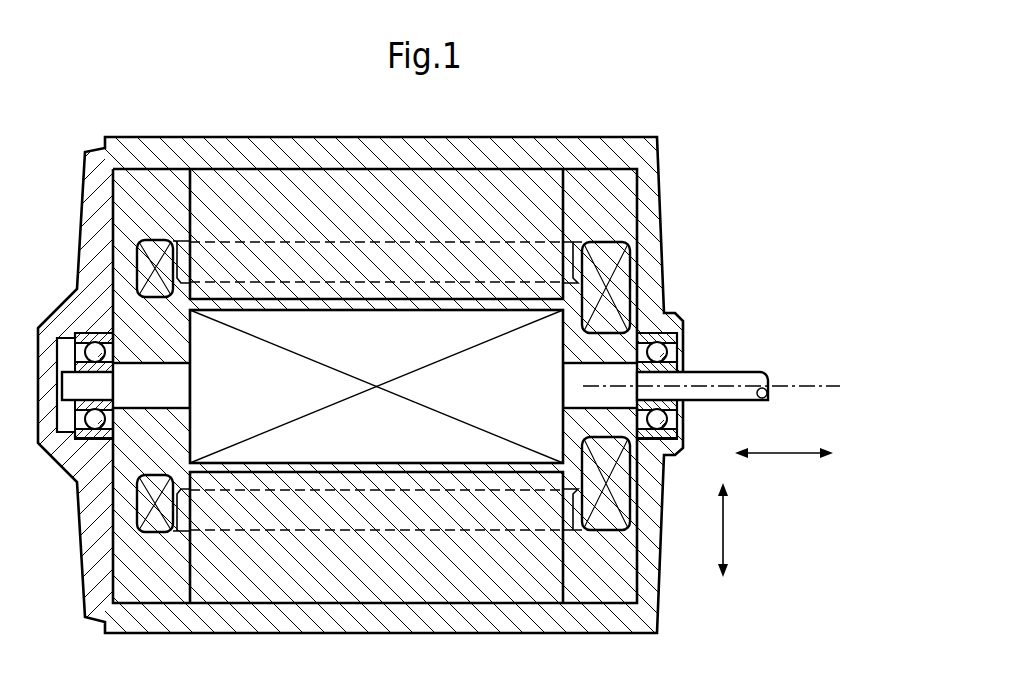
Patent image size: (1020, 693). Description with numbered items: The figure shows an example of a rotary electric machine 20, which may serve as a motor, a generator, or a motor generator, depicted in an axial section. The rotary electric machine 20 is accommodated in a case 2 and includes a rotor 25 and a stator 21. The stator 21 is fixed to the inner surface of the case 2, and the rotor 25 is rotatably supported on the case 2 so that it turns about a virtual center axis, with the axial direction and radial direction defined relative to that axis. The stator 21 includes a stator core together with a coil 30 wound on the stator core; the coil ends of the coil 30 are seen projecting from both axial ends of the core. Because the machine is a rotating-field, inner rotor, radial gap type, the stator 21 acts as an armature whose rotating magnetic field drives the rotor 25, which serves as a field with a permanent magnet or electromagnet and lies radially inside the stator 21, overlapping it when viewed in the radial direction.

The rotary electric machine 20 is at (696, 89).
The case 2 is at (432, 137).
The stator 21 is at (297, 187).
The coil 30 is at (607, 240).
The rotor 25 is at (360, 448).